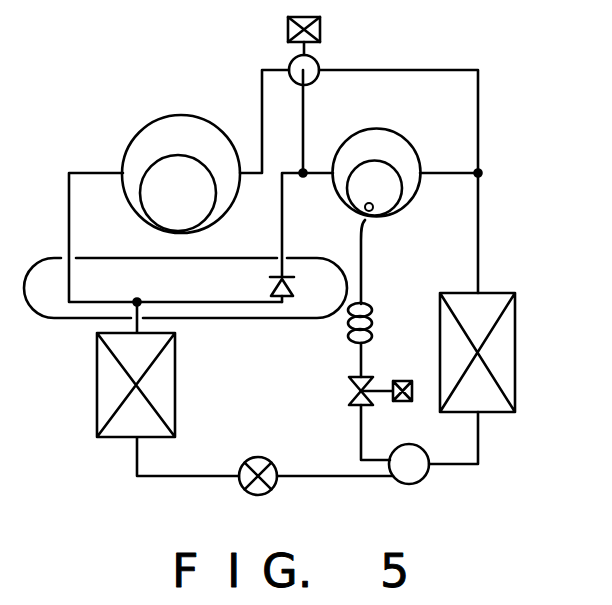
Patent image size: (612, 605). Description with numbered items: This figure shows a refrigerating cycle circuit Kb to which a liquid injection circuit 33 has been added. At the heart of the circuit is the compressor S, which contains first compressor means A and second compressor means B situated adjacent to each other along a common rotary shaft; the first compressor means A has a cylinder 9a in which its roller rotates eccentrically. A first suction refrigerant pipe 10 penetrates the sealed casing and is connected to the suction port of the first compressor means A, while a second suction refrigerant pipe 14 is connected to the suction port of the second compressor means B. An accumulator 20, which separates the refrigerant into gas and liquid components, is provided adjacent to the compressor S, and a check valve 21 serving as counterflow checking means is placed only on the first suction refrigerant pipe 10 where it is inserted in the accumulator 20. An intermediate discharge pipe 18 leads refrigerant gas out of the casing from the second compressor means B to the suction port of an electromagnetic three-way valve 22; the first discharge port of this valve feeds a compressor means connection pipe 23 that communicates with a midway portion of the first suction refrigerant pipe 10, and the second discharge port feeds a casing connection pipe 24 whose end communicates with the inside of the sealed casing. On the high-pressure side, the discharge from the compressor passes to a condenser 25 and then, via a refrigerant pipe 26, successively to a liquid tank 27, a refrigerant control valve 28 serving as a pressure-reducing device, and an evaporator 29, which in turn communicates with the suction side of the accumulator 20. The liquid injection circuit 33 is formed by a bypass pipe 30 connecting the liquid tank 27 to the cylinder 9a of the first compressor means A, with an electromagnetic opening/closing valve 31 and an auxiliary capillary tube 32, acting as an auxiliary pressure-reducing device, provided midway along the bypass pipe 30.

The cylinder 9a is at (404, 186).
The first suction refrigerant pipe 10 is at (282, 230).
The second suction refrigerant pipe 14 is at (69, 220).
The intermediate discharge pipe 18 is at (262, 124).
The accumulator 20 is at (58, 320).
The check valve 21 is at (284, 297).
The electromagnetic three-way valve 22 is at (314, 58).
The compressor means connection pipe 23 is at (304, 108).
The casing connection pipe 24 is at (414, 70).
The condenser 25 is at (515, 351).
The refrigerant pipe 26 is at (479, 456).
The liquid tank 27 is at (412, 484).
The refrigerant control valve 28 is at (275, 488).
The evaporator 29 is at (175, 385).
The bypass pipe 30 is at (362, 432).
The electromagnetic opening/closing valve 31 is at (349, 393).
The auxiliary capillary tube 32 is at (372, 312).
The liquid injection circuit 33 is at (372, 372).
The first compressor means A is at (399, 220).
The second compressor means B is at (165, 118).
The compressor S is at (397, 188).
The refrigerating cycle circuit Kb is at (499, 161).